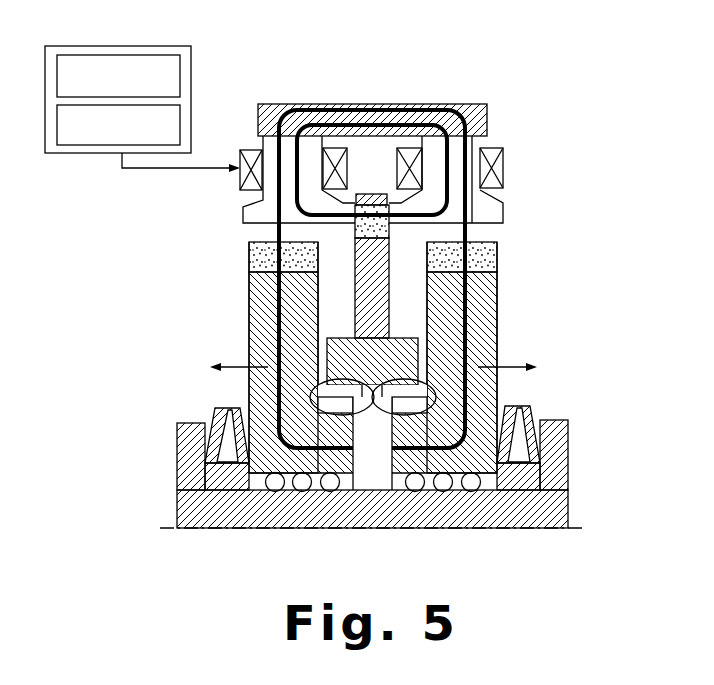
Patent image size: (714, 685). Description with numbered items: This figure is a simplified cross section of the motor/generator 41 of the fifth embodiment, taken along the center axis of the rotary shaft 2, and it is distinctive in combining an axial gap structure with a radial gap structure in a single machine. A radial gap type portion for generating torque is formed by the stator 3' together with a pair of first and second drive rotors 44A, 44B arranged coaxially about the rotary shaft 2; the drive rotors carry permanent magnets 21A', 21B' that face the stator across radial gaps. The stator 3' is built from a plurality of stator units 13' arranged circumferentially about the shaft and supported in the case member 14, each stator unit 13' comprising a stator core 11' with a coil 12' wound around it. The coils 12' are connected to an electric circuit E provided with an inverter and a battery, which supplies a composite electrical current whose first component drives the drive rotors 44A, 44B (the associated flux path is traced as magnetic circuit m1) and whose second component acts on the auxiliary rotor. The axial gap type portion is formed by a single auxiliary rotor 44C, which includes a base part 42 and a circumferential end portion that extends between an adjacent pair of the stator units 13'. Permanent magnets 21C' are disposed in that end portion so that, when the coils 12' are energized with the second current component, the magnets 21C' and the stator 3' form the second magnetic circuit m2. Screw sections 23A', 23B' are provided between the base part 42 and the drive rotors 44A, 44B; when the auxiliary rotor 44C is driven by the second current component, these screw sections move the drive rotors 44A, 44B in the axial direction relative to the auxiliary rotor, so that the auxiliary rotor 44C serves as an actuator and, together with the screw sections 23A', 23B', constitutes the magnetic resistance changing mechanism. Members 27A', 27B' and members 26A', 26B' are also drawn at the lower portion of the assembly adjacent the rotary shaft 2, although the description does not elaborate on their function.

The electric circuit E is at (192, 76).
The case member 14 is at (272, 105).
The outer magnetic flux path m1 is at (345, 108).
The second magnetic circuit m2 is at (386, 108).
The stator 3' is at (432, 63).
The motor/generator 41 is at (526, 85).
The stator core 11' is at (414, 163).
The coil 12' is at (413, 169).
The stator unit 13' is at (618, 132).
The permanent magnet 21A' is at (245, 244).
The permanent magnet 21B' is at (517, 248).
The permanent magnet 21C' is at (469, 216).
The first drive rotor 44A is at (262, 310).
The second drive rotor 44B is at (485, 292).
The auxiliary rotor 44C is at (383, 302).
The base part 42 is at (373, 360).
The screw section 23A' is at (253, 435).
The screw section 23B' is at (495, 435).
The seal member 27A' is at (174, 435).
The seal member 27B' is at (572, 434).
The support block 26A' is at (168, 456).
The support block 26B' is at (572, 455).
The rotary shaft 2 is at (497, 512).